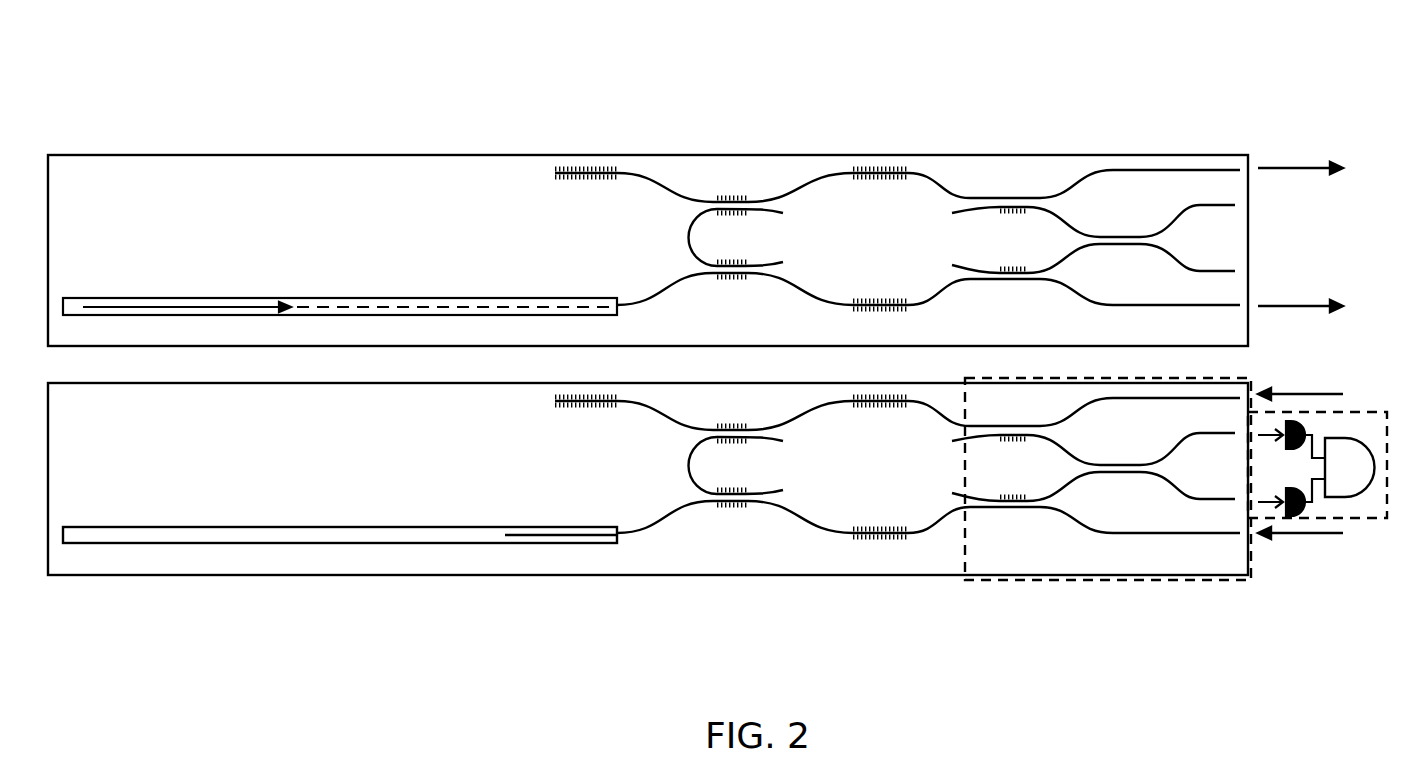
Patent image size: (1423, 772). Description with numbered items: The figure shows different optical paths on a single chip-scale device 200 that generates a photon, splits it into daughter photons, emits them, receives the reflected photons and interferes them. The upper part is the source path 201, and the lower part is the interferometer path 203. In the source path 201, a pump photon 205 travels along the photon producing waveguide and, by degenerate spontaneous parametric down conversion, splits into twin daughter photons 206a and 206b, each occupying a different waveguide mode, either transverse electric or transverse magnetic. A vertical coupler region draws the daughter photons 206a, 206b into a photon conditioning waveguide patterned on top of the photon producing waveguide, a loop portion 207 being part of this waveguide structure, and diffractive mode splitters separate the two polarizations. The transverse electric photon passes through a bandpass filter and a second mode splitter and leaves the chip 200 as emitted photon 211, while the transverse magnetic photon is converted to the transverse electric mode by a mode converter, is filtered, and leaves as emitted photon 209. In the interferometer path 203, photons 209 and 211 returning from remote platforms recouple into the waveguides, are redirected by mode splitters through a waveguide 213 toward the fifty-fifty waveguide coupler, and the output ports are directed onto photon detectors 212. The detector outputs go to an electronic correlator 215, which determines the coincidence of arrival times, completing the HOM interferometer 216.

The chip-scale device 200 is at (433, 153).
The source path 201 is at (204, 88).
The interferometer path 203 is at (159, 647).
The pump photon 205 is at (188, 297).
The daughter photon 206a is at (338, 298).
The daughter photon 206b is at (347, 312).
The loop waveguide 207 is at (685, 238).
The emitted photon 209 is at (1297, 166).
The emitted photon 211 is at (1307, 303).
The photon detectors 212 is at (1284, 495).
The output waveguide 213 is at (1082, 522).
The electronic correlator 215 is at (1368, 490).
The HOM interferometer 216 is at (1045, 583).